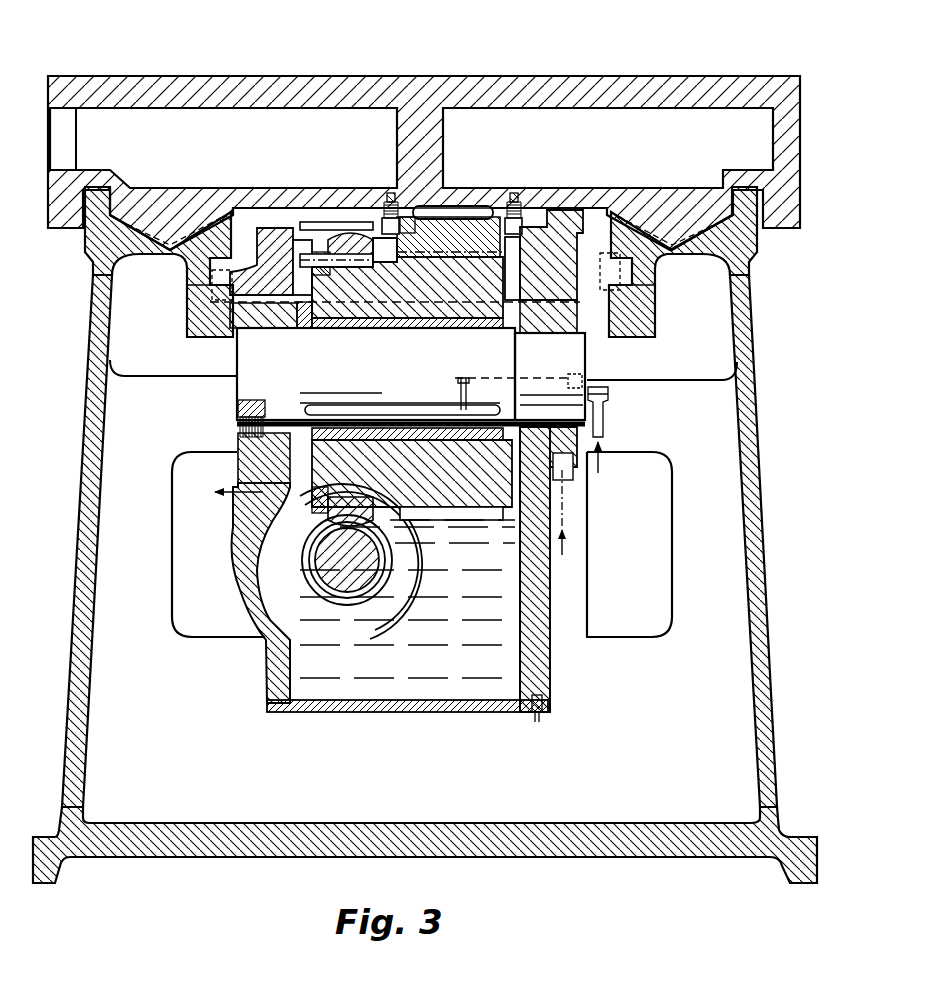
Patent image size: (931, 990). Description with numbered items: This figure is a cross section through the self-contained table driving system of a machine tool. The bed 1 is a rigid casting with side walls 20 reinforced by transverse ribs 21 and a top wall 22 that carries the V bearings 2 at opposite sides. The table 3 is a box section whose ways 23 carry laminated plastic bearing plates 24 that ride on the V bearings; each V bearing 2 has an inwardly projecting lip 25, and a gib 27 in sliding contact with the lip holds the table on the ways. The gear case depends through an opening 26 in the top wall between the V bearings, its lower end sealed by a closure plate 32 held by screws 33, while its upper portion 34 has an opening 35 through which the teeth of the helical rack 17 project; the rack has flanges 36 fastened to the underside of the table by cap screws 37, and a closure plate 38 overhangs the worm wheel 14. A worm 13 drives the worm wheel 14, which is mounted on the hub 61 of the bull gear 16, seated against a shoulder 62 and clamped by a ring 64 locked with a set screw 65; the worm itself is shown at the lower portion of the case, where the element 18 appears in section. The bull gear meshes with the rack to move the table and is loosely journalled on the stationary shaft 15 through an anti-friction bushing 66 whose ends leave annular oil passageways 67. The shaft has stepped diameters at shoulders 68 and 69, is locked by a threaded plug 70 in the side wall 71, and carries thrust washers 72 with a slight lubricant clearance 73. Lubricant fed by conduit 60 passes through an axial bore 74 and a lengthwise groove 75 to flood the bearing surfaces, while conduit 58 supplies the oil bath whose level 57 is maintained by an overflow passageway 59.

The bed 1 is at (80, 432).
The V bearing 2 is at (100, 256).
The table 3 is at (234, 70).
The worm 13 is at (348, 620).
The worm wheel 14 is at (350, 247).
The stationary shaft 15 is at (255, 379).
The bull gear 16 is at (460, 267).
The helical rack 17 is at (443, 240).
The drive shaft 18 is at (372, 577).
The side wall 20 is at (88, 530).
The transverse rib 21 is at (720, 627).
The top wall 22 is at (282, 188).
The way 23 is at (207, 200).
The laminated plastic bearing plate 24 is at (158, 222).
The lip 25 is at (185, 243).
The opening 26 is at (222, 330).
The gib 27 is at (650, 308).
The closure plate 32 is at (440, 712).
The screw 33 is at (538, 713).
The upper portion 34 is at (320, 228).
The opening 35 is at (517, 250).
The flange 36 is at (393, 218).
The cap screw 37 is at (387, 205).
The closure plate 38 is at (345, 183).
The oil level 57 is at (566, 495).
The conduit 58 is at (568, 518).
The overflow passageway 59 is at (220, 497).
The conduit 60 is at (607, 418).
The hub 61 is at (332, 290).
The shoulder 62 is at (440, 508).
The ring 64 is at (330, 222).
The set screw 65 is at (252, 545).
The anti-friction bushing 66 is at (398, 328).
The annular oil passageway 67 is at (503, 330).
The shoulder 68 is at (520, 345).
The shoulder 69 is at (298, 386).
The threaded plug 70 is at (240, 426).
The side wall 71 is at (250, 464).
The thrust washer 72 is at (286, 328).
The lubricant clearance 73 is at (612, 292).
The axial bore 74 is at (462, 379).
The groove 75 is at (405, 400).